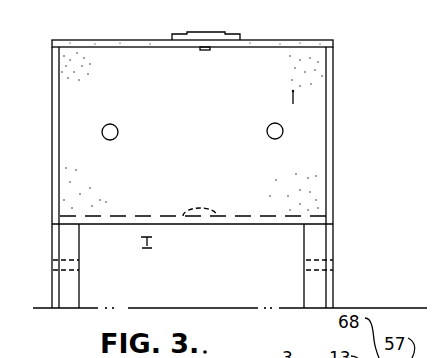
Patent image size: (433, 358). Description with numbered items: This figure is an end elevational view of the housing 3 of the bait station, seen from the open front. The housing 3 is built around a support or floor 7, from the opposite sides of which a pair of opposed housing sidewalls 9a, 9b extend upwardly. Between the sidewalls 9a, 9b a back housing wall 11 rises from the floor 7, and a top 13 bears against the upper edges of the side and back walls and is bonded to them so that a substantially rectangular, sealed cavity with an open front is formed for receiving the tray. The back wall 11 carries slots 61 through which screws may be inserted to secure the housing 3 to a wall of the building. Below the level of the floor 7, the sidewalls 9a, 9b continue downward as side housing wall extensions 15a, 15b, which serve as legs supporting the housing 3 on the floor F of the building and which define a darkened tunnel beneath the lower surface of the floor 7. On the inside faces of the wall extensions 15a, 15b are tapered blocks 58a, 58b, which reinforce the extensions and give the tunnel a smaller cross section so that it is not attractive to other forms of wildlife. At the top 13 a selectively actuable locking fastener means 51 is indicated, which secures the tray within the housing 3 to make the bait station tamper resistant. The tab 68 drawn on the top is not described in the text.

The housing 3 is at (308, 40).
The floor 7 is at (217, 226).
The housing sidewall 9a is at (52, 63).
The housing sidewall 9b is at (334, 153).
The back housing wall 11 is at (293, 92).
The top 13 is at (128, 40).
The side housing wall extension 15a is at (60, 283).
The side housing wall extension 15b is at (335, 276).
The locking fastener means 51 is at (205, 50).
The tapered block 58a is at (80, 298).
The tapered block 58b is at (303, 305).
The slots 61 is at (268, 125).
The handle tab 68 is at (186, 33).
The floor of a building F is at (352, 306).